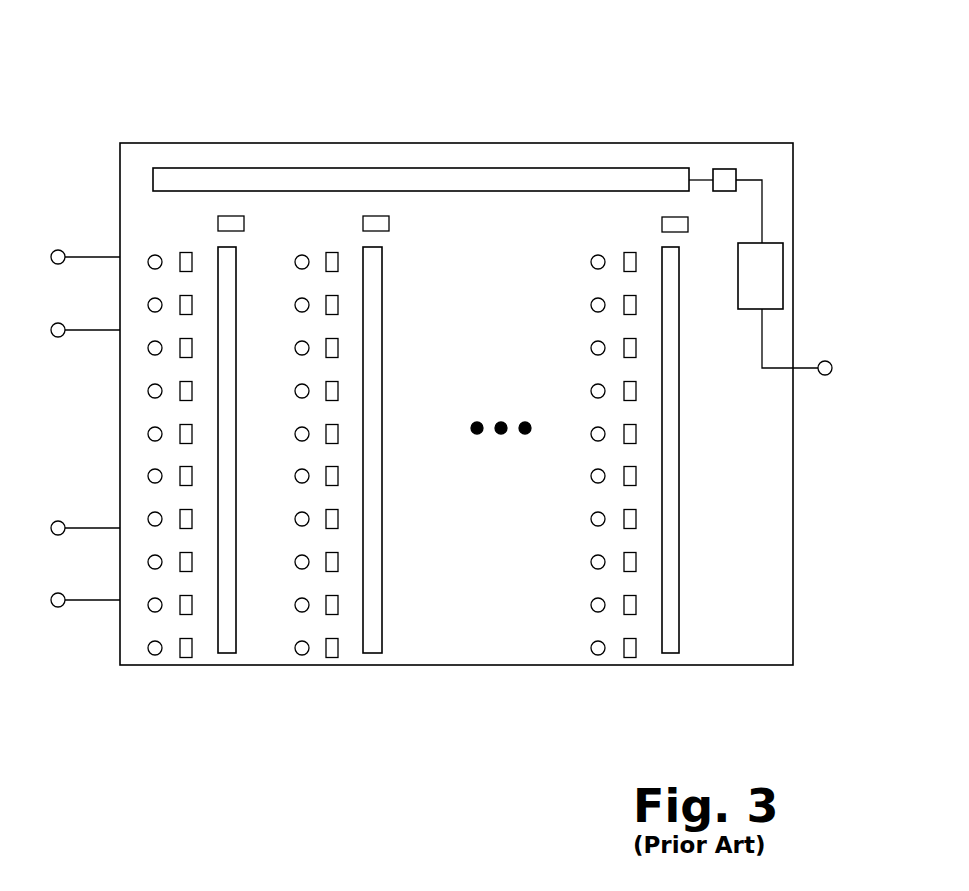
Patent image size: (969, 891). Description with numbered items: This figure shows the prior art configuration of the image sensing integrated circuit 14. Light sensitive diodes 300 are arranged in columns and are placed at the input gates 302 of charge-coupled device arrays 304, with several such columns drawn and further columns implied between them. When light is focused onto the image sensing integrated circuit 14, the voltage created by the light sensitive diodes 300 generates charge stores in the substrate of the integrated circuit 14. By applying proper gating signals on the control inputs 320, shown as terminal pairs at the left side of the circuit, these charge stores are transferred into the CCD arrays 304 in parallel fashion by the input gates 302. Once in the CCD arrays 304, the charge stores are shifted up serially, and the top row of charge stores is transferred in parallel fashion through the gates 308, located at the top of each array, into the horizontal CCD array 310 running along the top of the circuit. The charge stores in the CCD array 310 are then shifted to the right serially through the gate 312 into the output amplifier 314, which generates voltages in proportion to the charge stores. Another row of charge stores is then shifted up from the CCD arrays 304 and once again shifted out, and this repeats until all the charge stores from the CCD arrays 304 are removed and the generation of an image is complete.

The image sensing integrated circuit 14 is at (443, 100).
The light sensitive diodes 300 is at (150, 259).
The input gates 302 is at (186, 252).
The charge-coupled device arrays 304 is at (236, 300).
The gates 308 is at (244, 224).
The CCD array 310 is at (255, 175).
The gate 312 is at (728, 178).
The output amplifier 314 is at (775, 277).
The control inputs 320 is at (51, 255).